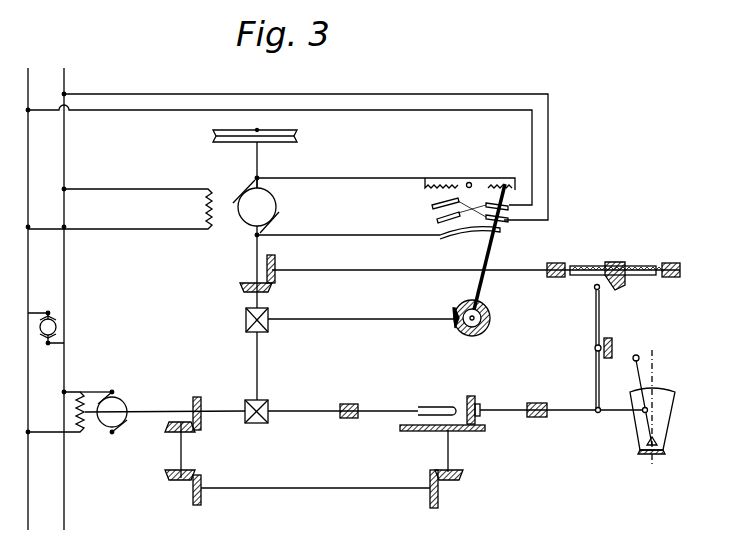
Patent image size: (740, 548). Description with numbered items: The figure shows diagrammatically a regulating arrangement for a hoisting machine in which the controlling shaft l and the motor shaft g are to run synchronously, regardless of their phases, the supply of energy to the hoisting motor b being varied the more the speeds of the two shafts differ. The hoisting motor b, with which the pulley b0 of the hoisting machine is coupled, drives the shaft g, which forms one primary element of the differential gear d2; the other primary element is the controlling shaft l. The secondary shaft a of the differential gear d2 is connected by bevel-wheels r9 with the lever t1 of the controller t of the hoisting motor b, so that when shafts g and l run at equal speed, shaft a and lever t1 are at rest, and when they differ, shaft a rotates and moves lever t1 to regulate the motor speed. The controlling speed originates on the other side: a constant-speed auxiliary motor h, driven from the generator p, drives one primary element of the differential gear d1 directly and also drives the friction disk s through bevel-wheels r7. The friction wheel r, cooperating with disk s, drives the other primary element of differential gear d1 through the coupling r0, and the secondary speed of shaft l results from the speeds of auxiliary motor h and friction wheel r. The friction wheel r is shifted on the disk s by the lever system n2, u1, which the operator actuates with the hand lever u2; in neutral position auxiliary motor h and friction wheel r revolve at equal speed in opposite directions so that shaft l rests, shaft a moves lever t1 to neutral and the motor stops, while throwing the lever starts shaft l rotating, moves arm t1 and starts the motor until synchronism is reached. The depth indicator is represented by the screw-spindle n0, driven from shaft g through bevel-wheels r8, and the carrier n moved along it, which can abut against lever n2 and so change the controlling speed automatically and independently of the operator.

The pulley b0 is at (298, 138).
The hoisting motor b is at (264, 207).
The controller t is at (386, 208).
The lever of the controller t1 is at (495, 240).
The generator p is at (57, 327).
The motor shaft g is at (254, 258).
The bevel-wheels r8 is at (276, 283).
The differential gear d2 is at (246, 319).
The secondary shaft a is at (361, 333).
The bevel-wheels r9 is at (466, 335).
The controlling shaft l is at (255, 370).
The screw-spindle n0 is at (577, 266).
The carrier n is at (620, 282).
The lever n2 is at (595, 318).
The auxiliary motor h is at (108, 420).
The bevel-wheels r7 is at (200, 440).
The differential gear d1 is at (258, 416).
The coupling r0 is at (432, 406).
The friction wheel r is at (480, 397).
The friction disk s is at (462, 432).
The lever u1 is at (570, 408).
The hand lever u2 is at (656, 378).